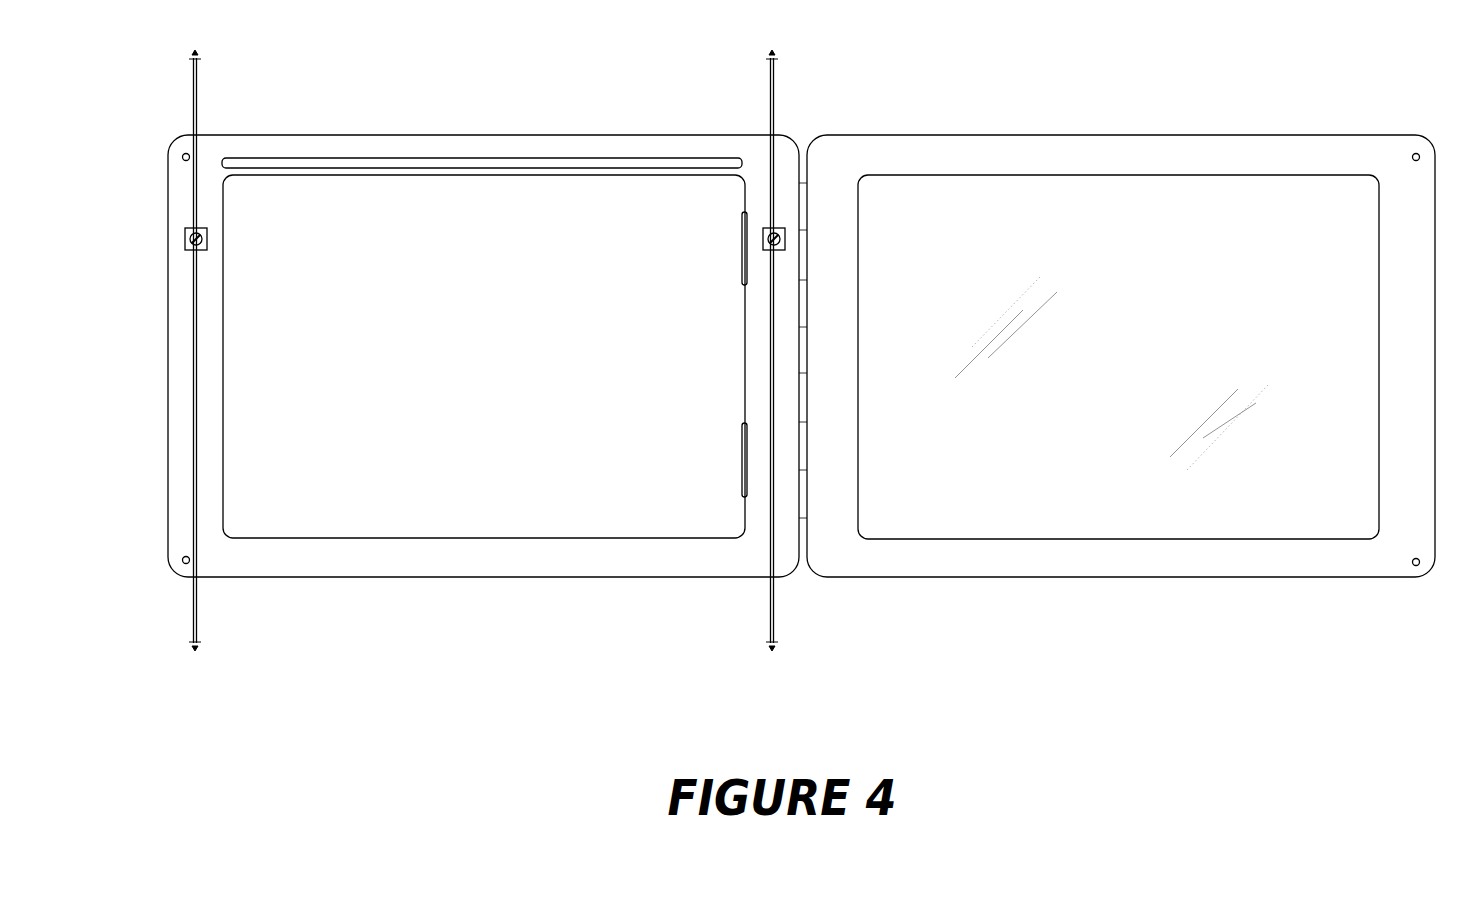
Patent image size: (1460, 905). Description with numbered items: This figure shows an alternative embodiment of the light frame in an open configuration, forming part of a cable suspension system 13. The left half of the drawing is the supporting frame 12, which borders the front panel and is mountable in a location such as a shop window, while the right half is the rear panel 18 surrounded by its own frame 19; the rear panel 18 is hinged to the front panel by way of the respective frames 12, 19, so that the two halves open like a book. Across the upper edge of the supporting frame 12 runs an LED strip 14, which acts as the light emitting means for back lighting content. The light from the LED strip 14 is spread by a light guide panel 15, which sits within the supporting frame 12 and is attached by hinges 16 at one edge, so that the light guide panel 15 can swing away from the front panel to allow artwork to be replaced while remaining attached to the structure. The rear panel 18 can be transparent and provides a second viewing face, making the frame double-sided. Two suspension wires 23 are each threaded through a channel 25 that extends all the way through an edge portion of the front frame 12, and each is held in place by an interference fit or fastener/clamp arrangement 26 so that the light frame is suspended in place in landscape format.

The supporting frame 12 is at (180, 433).
The cable suspension system 13 is at (759, 350).
The LED strip 14 is at (568, 158).
The light guide panel 15 is at (484, 356).
The hinges 16 is at (742, 248).
The rear panel 18 is at (1118, 357).
The frame 19 is at (1215, 155).
The suspension wire 23 is at (198, 617).
The channel 25 is at (194, 345).
The fastener/clamp arrangement 26 is at (185, 247).